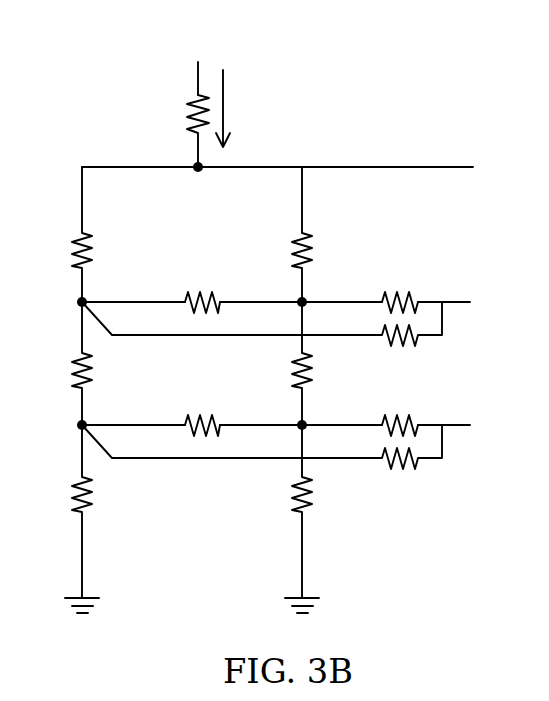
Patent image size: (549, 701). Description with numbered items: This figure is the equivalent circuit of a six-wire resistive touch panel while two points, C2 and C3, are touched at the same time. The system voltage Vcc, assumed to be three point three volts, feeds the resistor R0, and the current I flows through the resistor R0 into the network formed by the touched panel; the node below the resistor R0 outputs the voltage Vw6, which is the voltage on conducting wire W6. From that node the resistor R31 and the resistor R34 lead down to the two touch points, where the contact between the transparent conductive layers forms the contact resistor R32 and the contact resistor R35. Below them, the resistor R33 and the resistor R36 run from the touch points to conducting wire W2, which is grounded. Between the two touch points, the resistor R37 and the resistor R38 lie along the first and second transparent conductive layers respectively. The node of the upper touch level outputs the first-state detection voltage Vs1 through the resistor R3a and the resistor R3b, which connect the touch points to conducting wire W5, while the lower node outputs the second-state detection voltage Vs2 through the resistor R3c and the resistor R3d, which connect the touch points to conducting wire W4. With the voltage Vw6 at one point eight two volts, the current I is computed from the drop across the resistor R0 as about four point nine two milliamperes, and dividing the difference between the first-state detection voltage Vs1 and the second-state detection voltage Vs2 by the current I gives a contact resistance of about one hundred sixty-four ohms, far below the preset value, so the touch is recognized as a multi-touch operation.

The resistor R0 is at (178, 131).
The resistor R31 is at (62, 234).
The resistor R32 is at (62, 363).
The resistor R33 is at (65, 519).
The resistor R34 is at (282, 234).
The resistor R35 is at (281, 363).
The resistor R36 is at (284, 519).
The resistor R37 is at (200, 286).
The resistor R38 is at (200, 409).
The resistor R3a is at (400, 286).
The resistor R3b is at (262, 345).
The resistor R3c is at (400, 410).
The resistor R3d is at (262, 466).
The system voltage Vcc is at (199, 64).
The voltage Vw6 is at (299, 169).
The first-state detection voltage Vs1 is at (293, 306).
The second-state detection voltage Vs2 is at (294, 428).
The current I is at (230, 108).